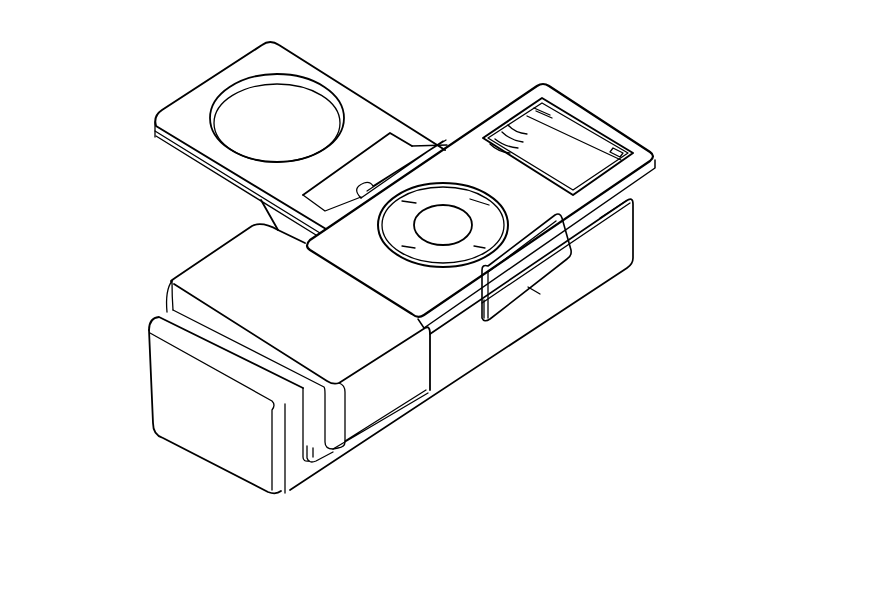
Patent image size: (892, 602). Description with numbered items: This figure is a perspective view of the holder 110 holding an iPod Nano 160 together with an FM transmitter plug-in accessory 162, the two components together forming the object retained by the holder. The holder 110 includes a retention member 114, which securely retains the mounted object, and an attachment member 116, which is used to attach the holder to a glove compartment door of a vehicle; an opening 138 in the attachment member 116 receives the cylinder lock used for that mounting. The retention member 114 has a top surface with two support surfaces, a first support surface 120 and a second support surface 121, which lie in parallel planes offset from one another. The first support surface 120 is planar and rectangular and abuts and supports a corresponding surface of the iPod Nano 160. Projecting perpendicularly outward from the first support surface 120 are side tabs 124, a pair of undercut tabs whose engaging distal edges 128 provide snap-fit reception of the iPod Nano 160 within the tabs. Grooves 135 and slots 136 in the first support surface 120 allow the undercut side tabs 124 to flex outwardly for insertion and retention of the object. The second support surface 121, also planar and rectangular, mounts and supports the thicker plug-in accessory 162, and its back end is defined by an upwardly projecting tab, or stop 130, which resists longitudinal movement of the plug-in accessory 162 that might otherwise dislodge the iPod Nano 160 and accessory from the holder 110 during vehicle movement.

The holder 110 is at (128, 43).
The retention member 114 is at (620, 256).
The attachment member 116 is at (350, 105).
The first support surface 120 is at (631, 199).
The second support surface 121 is at (313, 450).
The side tabs 124 is at (563, 238).
The engaging distal edges 128 is at (362, 192).
The stop 130 is at (175, 423).
The grooves 135 is at (483, 302).
The slots 136 is at (533, 291).
The opening 138 is at (253, 135).
The iPod Nano 160 is at (477, 153).
The FM transmitter plug-in accessory 162 is at (227, 263).